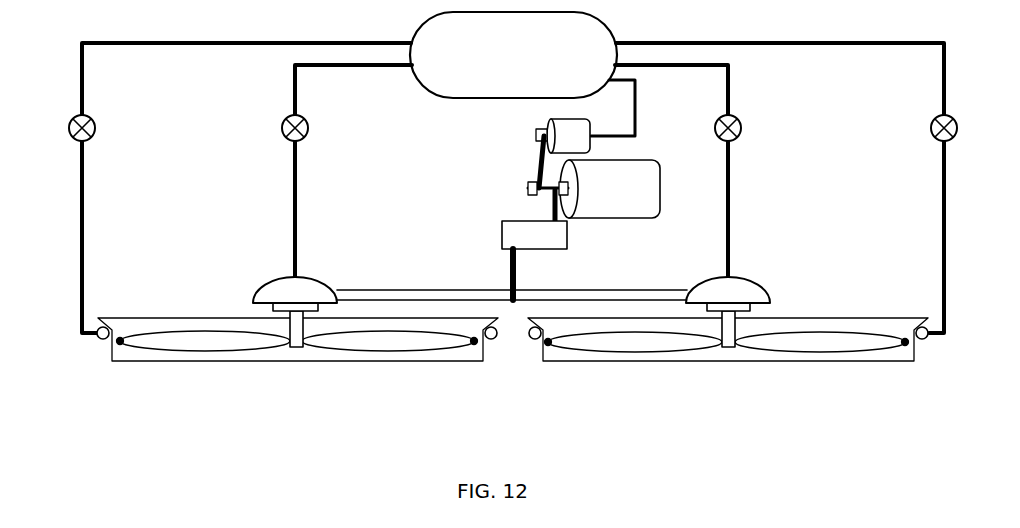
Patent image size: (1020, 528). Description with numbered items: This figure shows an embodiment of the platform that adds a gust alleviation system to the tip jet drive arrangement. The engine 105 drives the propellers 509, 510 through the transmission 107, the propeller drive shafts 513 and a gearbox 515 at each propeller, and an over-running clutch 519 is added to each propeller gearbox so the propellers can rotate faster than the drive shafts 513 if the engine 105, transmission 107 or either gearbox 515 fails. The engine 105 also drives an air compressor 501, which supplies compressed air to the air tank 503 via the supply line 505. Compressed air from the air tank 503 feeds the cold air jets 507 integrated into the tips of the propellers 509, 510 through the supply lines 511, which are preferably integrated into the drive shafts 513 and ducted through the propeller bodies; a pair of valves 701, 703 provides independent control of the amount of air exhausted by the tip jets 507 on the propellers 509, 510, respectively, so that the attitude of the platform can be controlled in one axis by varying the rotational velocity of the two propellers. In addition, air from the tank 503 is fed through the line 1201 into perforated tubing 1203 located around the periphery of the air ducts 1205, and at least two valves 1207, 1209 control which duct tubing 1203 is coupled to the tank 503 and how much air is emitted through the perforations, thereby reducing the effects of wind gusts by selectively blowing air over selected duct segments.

The air tank 503 is at (532, 66).
The air compressor 501 is at (570, 134).
The supply line 505 is at (635, 113).
The engine 105 is at (610, 190).
The transmission 107 is at (502, 236).
The valve 1207 is at (133, 112).
The valve 701 is at (281, 128).
The valve 703 is at (742, 128).
The valve 1209 is at (930, 128).
The supply lines 511 is at (293, 213).
The line 1201 is at (127, 226).
The gearbox 515 is at (262, 284).
The propeller drive shafts 513 is at (290, 323).
The over-running clutch 519 is at (342, 300).
The cold air jets 507 is at (121, 344).
The air ducts 1205 is at (442, 362).
The perforated tubing 1203 is at (103, 340).
The propeller 509 is at (355, 341).
The propeller 510 is at (684, 342).